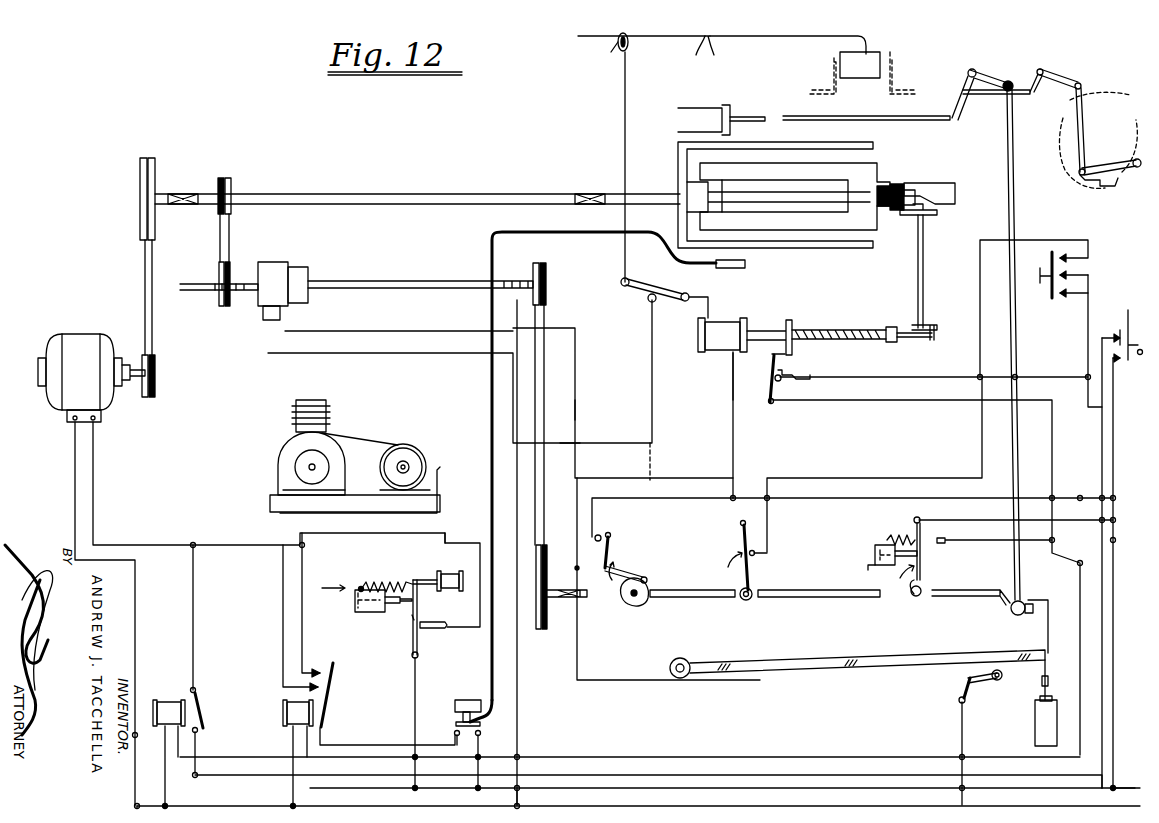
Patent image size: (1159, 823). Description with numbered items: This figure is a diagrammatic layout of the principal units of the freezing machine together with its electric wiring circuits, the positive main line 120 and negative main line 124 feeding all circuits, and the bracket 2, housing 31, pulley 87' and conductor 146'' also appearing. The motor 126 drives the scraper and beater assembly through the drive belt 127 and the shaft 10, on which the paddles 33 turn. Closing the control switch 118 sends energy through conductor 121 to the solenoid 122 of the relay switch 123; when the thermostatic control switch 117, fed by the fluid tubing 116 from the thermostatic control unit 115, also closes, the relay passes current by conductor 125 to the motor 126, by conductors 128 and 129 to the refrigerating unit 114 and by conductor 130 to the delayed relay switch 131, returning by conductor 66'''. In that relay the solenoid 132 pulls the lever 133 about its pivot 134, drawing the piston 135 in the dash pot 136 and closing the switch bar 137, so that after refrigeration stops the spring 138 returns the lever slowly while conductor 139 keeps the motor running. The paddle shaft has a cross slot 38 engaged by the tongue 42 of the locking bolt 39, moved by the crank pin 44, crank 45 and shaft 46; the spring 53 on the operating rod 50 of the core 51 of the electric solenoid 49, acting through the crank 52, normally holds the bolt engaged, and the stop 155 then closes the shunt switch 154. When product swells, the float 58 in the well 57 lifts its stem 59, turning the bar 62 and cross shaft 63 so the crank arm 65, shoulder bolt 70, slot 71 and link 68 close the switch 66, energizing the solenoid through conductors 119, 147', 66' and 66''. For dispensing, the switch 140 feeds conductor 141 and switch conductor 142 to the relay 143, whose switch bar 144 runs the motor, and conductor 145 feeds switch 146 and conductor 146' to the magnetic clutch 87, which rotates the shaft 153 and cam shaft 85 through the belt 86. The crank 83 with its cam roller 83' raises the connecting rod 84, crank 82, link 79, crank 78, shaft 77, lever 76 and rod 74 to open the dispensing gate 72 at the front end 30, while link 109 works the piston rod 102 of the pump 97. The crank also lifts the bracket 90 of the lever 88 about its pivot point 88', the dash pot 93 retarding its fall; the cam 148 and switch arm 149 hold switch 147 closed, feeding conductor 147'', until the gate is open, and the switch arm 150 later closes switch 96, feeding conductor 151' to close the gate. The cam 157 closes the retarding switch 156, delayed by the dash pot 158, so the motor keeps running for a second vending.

The bracket 2 is at (898, 88).
The shaft 10 is at (275, 192).
The front end 30 is at (1113, 90).
The housing 31 is at (680, 147).
The paddles 33 is at (795, 196).
The cross slot 38 is at (888, 184).
The locking bolt 39 is at (912, 195).
The tongue 42 is at (905, 188).
The crank pin 44 is at (950, 185).
The crank 45 is at (912, 216).
The shaft 46 is at (925, 280).
The electric solenoid 49 is at (700, 338).
The operating rod 50 is at (849, 327).
The core 51 is at (762, 324).
The crank 52 is at (934, 324).
The spring 53 is at (889, 326).
The well 57 is at (838, 78).
The float 58 is at (860, 65).
The stem 59 is at (868, 43).
The bar 62 is at (800, 35).
The cross shaft 63 is at (712, 33).
The crank arm 65 is at (685, 35).
The switch 66 is at (659, 282).
The conductor 66' is at (755, 399).
The conductor 66'' is at (589, 457).
The conductor 66''' is at (543, 752).
The link 68 is at (629, 100).
The shoulder bolt 70 is at (625, 33).
The slot 71 is at (618, 52).
The dispensing gate 72 is at (1094, 165).
The rod 74 is at (1084, 132).
The lever 76 is at (1060, 76).
The shaft 77 is at (1040, 68).
The crank 78 is at (968, 73).
The link 79 is at (996, 98).
The crank 82 is at (987, 74).
The crank 83 is at (991, 613).
The cam roller 83' is at (1026, 620).
The connecting rod 84 is at (1012, 178).
The cam shaft 85 is at (670, 598).
The belt 86 is at (544, 357).
The magnetic clutch 87 is at (244, 291).
The pulley 87' is at (240, 242).
The lever 88 is at (867, 649).
The pivot point 88' is at (697, 652).
The bracket 90 is at (1045, 599).
The dash pot 93 is at (1046, 721).
The switch 96 is at (958, 697).
The pump 97 is at (704, 120).
The piston rod 102 is at (734, 115).
The link 109 is at (938, 112).
The refrigerating unit 114 is at (350, 458).
The thermostatic control unit 115 is at (726, 269).
The fluid tubing 116 is at (597, 238).
The thermostatic control switch 117 is at (481, 711).
The control switch 118 is at (1123, 336).
The conductor 119 is at (1116, 658).
The main line 120 is at (1032, 783).
The conductor 121 is at (1106, 614).
The solenoid 122 is at (287, 715).
The relay switch 123 is at (282, 692).
The main line 124 is at (312, 807).
The conductor 125 is at (138, 545).
The motor 126 is at (91, 378).
The drive belt 127 is at (156, 280).
The conductor 128 is at (304, 578).
The conductor 129 is at (443, 500).
The conductor 130 is at (447, 535).
The delayed relay switch 131 is at (410, 620).
The solenoid 132 is at (452, 578).
The lever 133 is at (430, 617).
The pivot 134 is at (419, 656).
The piston 135 is at (355, 602).
The dash pot 136 is at (375, 612).
The switch bar 137 is at (447, 622).
The spring 138 is at (380, 584).
The conductor 139 is at (418, 722).
The switch 140 is at (1052, 280).
The conductor 141 is at (1090, 314).
The switch conductor 142 is at (1078, 322).
The relay 143 is at (165, 700).
The switch bar 144 is at (213, 659).
The conductor 145 is at (980, 422).
The switch 146 is at (771, 556).
The conductor 146' is at (500, 387).
The wire 146'' is at (603, 404).
The switch 147 is at (630, 544).
The conductor 147' is at (710, 519).
The conductor 147'' is at (562, 535).
The cam 148 is at (628, 604).
The switch arm 149 is at (642, 574).
The switch arm 150 is at (975, 692).
The conductor 151' is at (695, 649).
The shaft 153 is at (358, 283).
The shunt switch 154 is at (916, 566).
The stop 155 is at (780, 375).
The retarding switch 156 is at (893, 540).
The cam 157 is at (912, 594).
The dash pot 158 is at (887, 564).